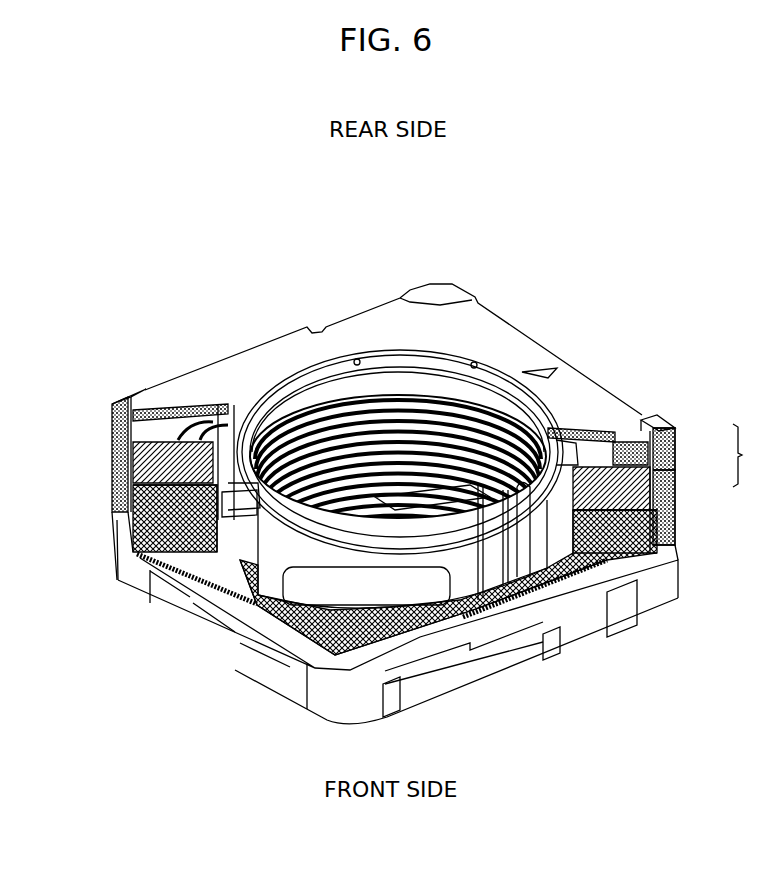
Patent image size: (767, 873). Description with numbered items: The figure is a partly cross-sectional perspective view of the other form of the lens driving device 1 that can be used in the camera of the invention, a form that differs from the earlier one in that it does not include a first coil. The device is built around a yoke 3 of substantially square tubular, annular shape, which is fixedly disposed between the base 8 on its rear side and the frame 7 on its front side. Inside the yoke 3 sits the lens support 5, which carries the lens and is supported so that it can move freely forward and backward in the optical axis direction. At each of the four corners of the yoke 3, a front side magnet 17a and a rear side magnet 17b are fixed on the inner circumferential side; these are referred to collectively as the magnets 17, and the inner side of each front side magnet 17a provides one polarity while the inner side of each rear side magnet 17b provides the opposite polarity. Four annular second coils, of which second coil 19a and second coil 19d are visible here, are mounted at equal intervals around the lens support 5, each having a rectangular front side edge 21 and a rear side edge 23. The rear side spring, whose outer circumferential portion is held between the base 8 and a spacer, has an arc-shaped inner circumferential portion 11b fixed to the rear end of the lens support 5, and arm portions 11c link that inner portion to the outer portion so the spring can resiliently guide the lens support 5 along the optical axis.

The lens driving device 1 is at (456, 254).
The yoke 3 is at (115, 490).
The lens support 5 is at (452, 390).
The frame 7 is at (237, 655).
The base 8 is at (563, 385).
The inner circumferential portion 11b is at (276, 393).
The arm portion 11c is at (197, 407).
The magnets 17 is at (749, 455).
The front side magnet 17a is at (675, 488).
The rear side magnet 17b is at (673, 448).
The second coil 19a is at (460, 593).
The second coil 19d is at (517, 573).
The front side edge 21 is at (597, 580).
The rear side edge 23 is at (605, 440).